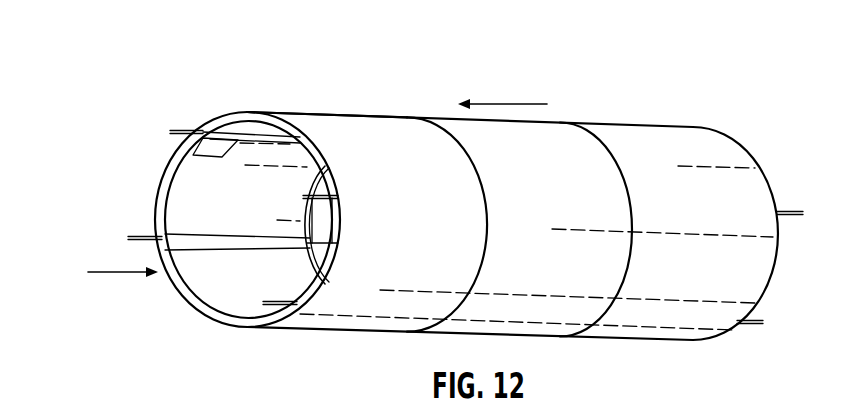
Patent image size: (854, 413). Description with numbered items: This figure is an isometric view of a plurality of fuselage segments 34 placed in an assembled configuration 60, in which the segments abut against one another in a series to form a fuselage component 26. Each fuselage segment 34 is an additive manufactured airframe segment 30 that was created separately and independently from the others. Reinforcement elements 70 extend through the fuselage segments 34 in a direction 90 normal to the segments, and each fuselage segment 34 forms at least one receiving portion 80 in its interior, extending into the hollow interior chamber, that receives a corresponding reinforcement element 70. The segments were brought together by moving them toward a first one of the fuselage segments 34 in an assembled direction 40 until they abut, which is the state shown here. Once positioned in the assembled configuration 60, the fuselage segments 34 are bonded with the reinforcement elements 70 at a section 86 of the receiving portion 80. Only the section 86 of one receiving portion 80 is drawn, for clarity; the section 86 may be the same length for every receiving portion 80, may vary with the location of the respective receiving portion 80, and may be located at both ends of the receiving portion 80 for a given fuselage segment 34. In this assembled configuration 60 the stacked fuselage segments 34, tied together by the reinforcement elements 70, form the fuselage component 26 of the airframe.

The fuselage component 26 is at (408, 98).
The fuselage segment 34 is at (343, 125).
The additive manufactured airframe segment 30 is at (583, 101).
The assembled configuration 60 is at (725, 102).
The assembled direction 40 is at (503, 102).
The normal direction 90 is at (123, 274).
The reinforcement element 70 is at (178, 128).
The receiving portion 80 is at (205, 127).
The section 86 is at (205, 156).